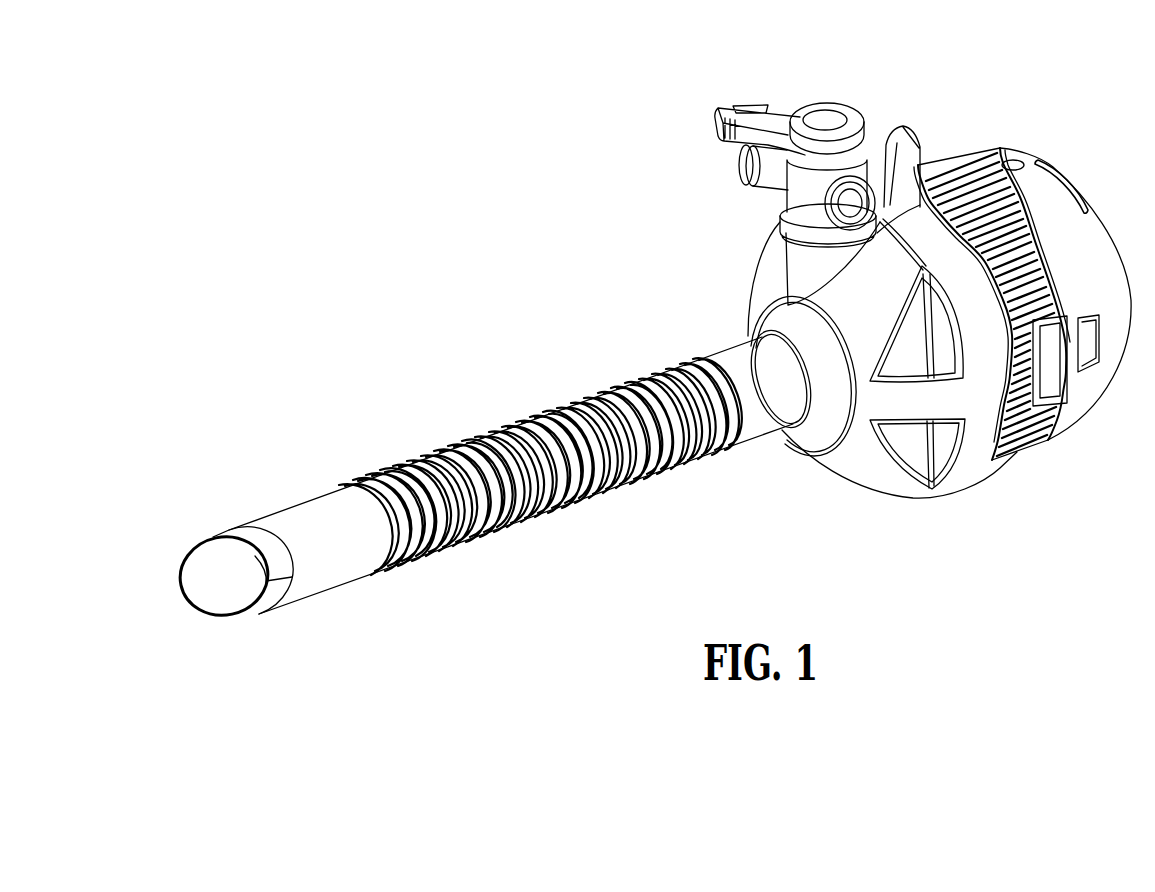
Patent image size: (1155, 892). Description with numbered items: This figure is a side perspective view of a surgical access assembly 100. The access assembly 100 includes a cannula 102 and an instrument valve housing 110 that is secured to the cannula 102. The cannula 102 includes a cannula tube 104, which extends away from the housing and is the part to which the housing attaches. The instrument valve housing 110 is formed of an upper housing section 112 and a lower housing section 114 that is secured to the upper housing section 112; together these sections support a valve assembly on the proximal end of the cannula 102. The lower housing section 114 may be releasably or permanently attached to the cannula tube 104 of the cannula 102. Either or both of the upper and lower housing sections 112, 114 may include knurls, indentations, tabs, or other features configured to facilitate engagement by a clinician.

The access assembly 100 is at (627, 120).
The cannula 102 is at (600, 328).
The cannula tube 104 is at (679, 353).
The instrument valve housing 110 is at (1070, 543).
The upper housing section 112 is at (1083, 436).
The lower housing section 114 is at (1002, 473).